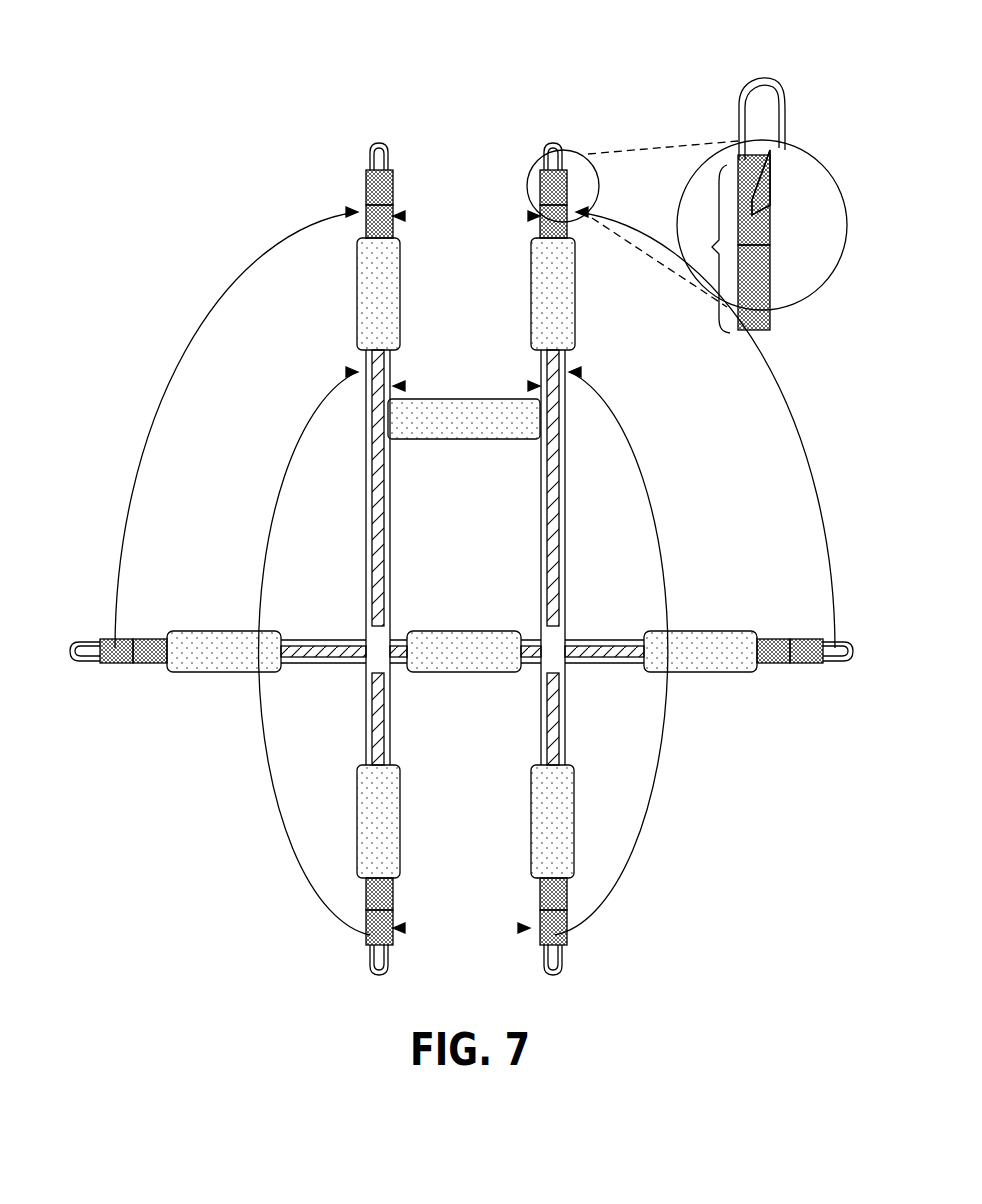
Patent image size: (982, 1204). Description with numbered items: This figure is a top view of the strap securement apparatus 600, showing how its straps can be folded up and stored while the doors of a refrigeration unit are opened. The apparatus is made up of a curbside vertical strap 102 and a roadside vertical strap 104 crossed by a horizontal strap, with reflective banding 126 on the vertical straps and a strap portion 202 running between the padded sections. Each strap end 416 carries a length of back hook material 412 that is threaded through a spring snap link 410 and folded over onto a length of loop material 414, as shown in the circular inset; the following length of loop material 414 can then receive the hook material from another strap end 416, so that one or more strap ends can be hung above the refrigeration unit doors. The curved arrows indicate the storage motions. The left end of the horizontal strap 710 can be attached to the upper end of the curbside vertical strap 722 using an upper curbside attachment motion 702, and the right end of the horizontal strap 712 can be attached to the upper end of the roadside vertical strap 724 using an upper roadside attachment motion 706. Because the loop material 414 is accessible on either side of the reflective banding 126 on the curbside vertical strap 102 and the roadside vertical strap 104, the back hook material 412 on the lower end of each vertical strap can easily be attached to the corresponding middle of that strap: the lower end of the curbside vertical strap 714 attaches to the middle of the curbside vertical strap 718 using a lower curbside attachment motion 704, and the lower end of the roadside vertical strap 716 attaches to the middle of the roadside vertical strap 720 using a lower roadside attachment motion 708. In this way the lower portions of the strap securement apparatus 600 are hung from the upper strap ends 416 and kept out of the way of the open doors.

The strap securement apparatus 600 is at (500, 70).
The curbside vertical strap 102 is at (368, 545).
The roadside vertical strap 104 is at (563, 545).
The reflective banding 126 is at (550, 482).
The shaft portion 202 is at (364, 400).
The spring snap link 410 is at (742, 100).
The back hook material 412 is at (122, 645).
The loop material 414 is at (368, 233).
The strap end 416 is at (700, 249).
The upper curbside attachment motion 702 is at (236, 427).
The lower curbside attachment motion 704 is at (308, 651).
The upper roadside attachment motion 706 is at (705, 427).
The lower roadside attachment motion 708 is at (615, 651).
The left end of the horizontal strap 710 is at (120, 672).
The right end of the horizontal strap 712 is at (802, 672).
The lower end of the curbside vertical strap 714 is at (404, 927).
The lower end of the roadside vertical strap 716 is at (520, 927).
The middle of the curbside vertical strap 718 is at (404, 385).
The middle of the roadside vertical strap 720 is at (530, 385).
The upper end of the curbside vertical strap 722 is at (404, 214).
The upper end of the roadside vertical strap 724 is at (530, 215).